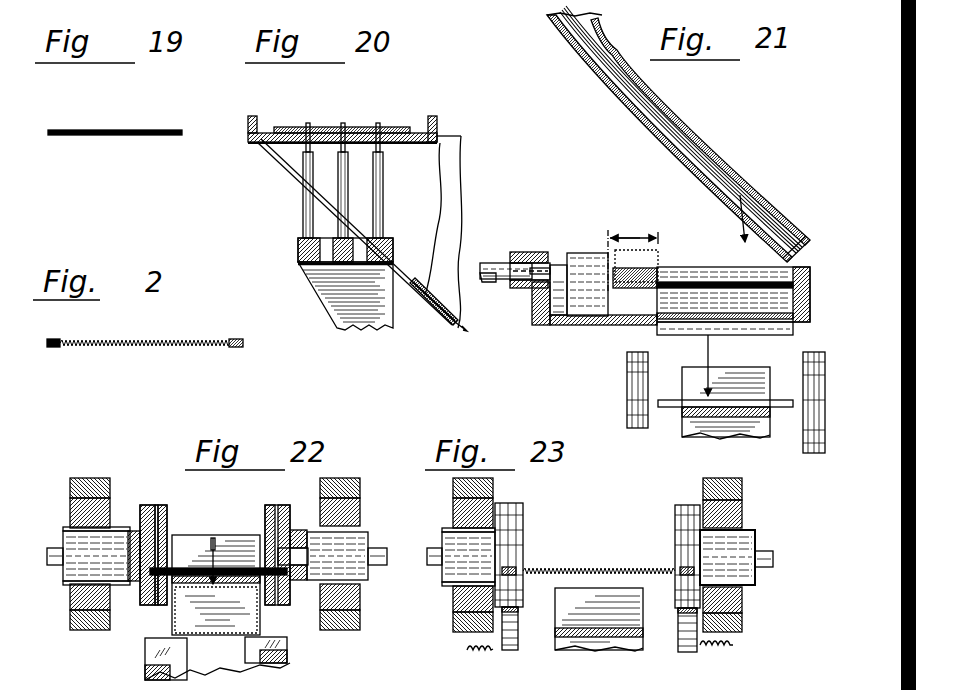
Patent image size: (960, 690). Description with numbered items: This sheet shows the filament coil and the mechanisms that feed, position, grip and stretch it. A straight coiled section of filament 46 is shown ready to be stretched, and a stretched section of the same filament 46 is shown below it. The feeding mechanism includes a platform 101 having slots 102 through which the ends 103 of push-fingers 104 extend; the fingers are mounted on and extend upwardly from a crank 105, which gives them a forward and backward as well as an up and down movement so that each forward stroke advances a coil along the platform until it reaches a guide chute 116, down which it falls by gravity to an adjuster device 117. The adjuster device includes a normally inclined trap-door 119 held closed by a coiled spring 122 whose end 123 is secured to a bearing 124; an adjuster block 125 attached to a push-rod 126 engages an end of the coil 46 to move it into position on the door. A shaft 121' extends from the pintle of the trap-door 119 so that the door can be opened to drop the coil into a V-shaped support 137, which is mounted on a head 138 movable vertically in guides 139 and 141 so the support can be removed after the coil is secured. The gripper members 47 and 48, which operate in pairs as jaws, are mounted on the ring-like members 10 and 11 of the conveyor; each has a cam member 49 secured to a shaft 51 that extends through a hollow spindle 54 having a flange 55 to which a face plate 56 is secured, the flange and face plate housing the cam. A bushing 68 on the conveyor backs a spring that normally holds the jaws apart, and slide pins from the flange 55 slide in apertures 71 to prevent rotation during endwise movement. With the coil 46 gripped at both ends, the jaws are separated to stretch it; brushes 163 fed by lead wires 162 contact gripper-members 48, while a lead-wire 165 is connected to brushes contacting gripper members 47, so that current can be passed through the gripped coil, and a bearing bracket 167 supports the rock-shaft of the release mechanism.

In FIG. 22, the ring-like member 10 is at (342, 630).
In FIG. 23, the ring-like member 10 is at (743, 619).
In FIG. 22, the ring-like member 11 is at (72, 620).
In FIG. 23, the ring-like member 11 is at (455, 625).
In FIG. 19, the coiled section of filament 46 is at (107, 130).
In FIG. 2, the coiled section of filament 46 is at (234, 334).
In FIG. 20, the coiled section of filament 46 is at (405, 128).
In FIG. 21, the coiled section of filament 46 is at (668, 313).
In FIG. 22, the coiled section of filament 46 is at (178, 567).
In FIG. 23, the coiled section of filament 46 is at (546, 568).
In FIG. 21, the gripper member 47 is at (805, 450).
In FIG. 22, the gripper member 47 is at (280, 504).
In FIG. 23, the gripper member 47 is at (678, 504).
In FIG. 21, the gripper member 48 is at (626, 386).
In FIG. 22, the gripper member 48 is at (149, 504).
In FIG. 23, the gripper member 48 is at (520, 502).
In FIG. 22, the cam member 49 is at (265, 533).
In FIG. 22, the shaft 51 is at (56, 548).
In FIG. 23, the shaft 51 is at (428, 550).
In FIG. 22, the hollow spindle 54 is at (66, 530).
In FIG. 23, the hollow spindle 54 is at (442, 532).
In FIG. 22, the flange 55 is at (141, 513).
In FIG. 22, the face plate 56 is at (168, 522).
In FIG. 22, the bushing 68 is at (72, 583).
In FIG. 23, the bushing 68 is at (458, 585).
In FIG. 22, the aperture 71 is at (72, 600).
In FIG. 23, the aperture 71 is at (455, 600).
In FIG. 20, the platform 101 is at (433, 120).
In FIG. 20, the slot 102 is at (386, 144).
In FIG. 20, the end of push-finger 103 is at (344, 134).
In FIG. 20, the push-finger 104 is at (377, 200).
In FIG. 20, the crank 105 is at (298, 252).
In FIG. 20, the guide chute 116 is at (435, 285).
In FIG. 21, the guide chute 116 is at (729, 172).
In FIG. 21, the adjuster device 117 is at (667, 200).
In FIG. 21, the trap-door 119 is at (681, 330).
In FIG. 21, the shaft 121' is at (645, 289).
In FIG. 21, the coiled spring 122 is at (645, 268).
In FIG. 21, the end of coiled spring 123 is at (608, 240).
In FIG. 21, the bearing 124 is at (540, 252).
In FIG. 21, the adjuster block 125 is at (592, 290).
In FIG. 21, the push-rod 126 is at (513, 262).
In FIG. 21, the V-shaped support 137 is at (682, 421).
In FIG. 22, the V-shaped support 137 is at (172, 620).
In FIG. 23, the V-shaped support 137 is at (556, 642).
In FIG. 22, the head 138 is at (246, 673).
In FIG. 22, the guide 139 is at (287, 660).
In FIG. 22, the guide 141 is at (145, 663).
In FIG. 23, the lead wire 162 is at (505, 648).
In FIG. 23, the brush 163 is at (467, 650).
In FIG. 23, the lead-wire 165 is at (733, 645).
In FIG. 23, the bearing bracket 167 is at (692, 652).